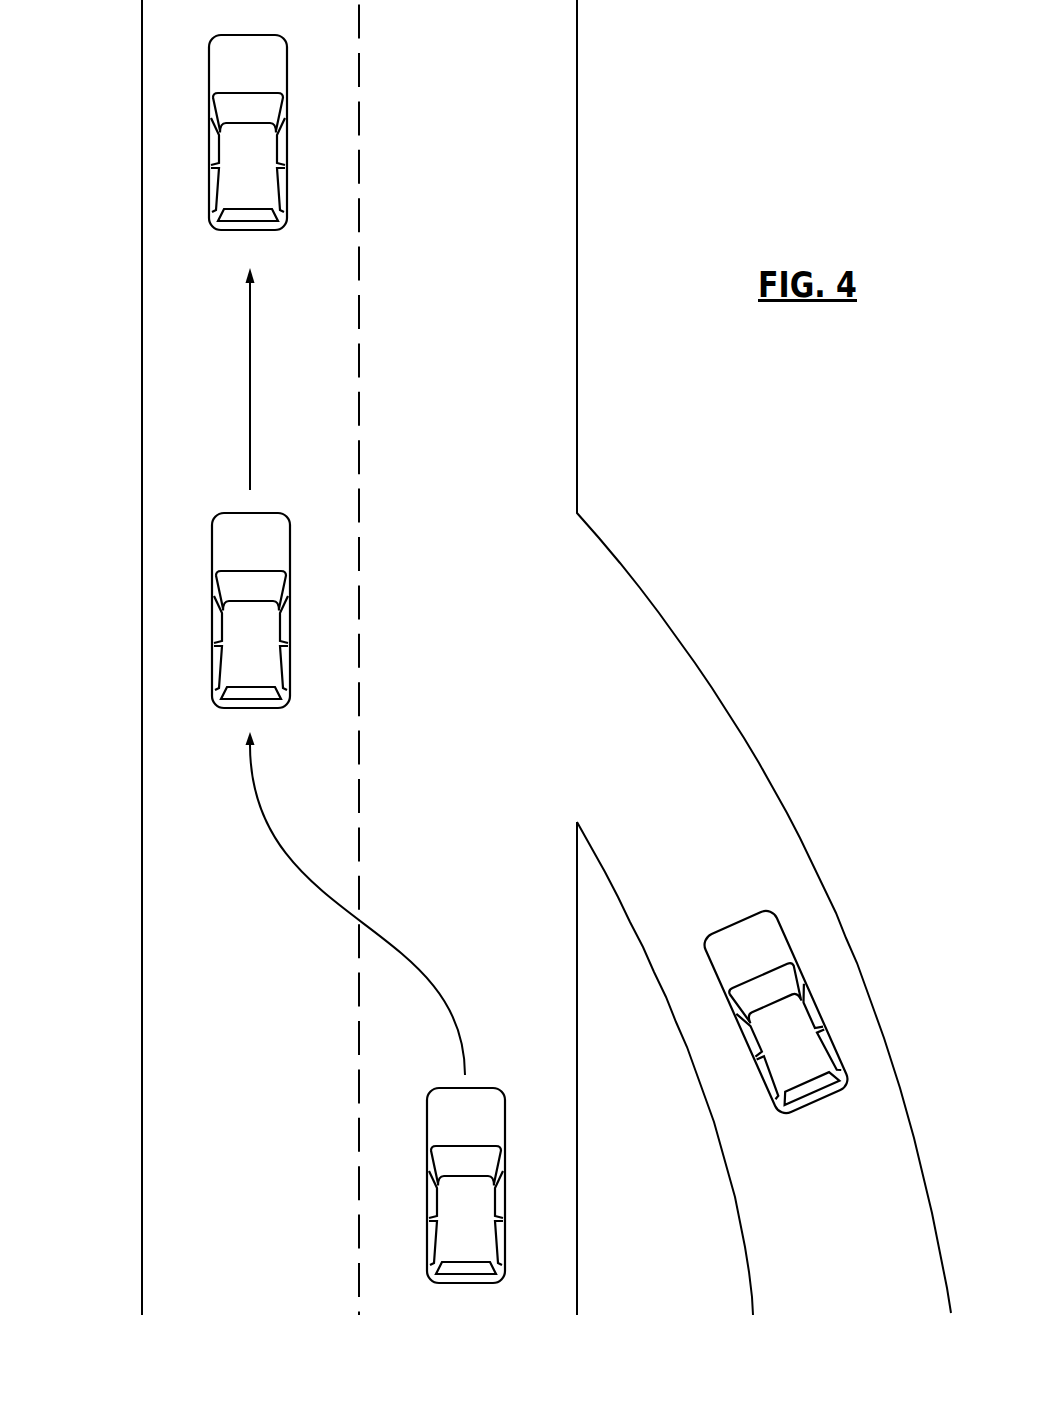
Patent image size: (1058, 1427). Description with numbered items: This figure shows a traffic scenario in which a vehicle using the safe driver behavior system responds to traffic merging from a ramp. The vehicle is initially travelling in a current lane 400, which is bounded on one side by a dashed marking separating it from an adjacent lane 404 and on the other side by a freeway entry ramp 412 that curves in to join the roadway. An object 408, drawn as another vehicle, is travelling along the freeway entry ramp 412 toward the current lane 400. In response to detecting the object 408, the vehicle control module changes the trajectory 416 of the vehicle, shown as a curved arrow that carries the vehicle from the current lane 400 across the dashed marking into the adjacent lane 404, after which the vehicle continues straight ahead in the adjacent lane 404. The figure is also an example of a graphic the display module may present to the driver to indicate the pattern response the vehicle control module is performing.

The current lane 400 is at (475, 217).
The adjacent lane 404 is at (250, 1130).
The object 408 is at (808, 990).
The freeway entry ramp 412 is at (667, 760).
The trajectory 416 is at (283, 857).